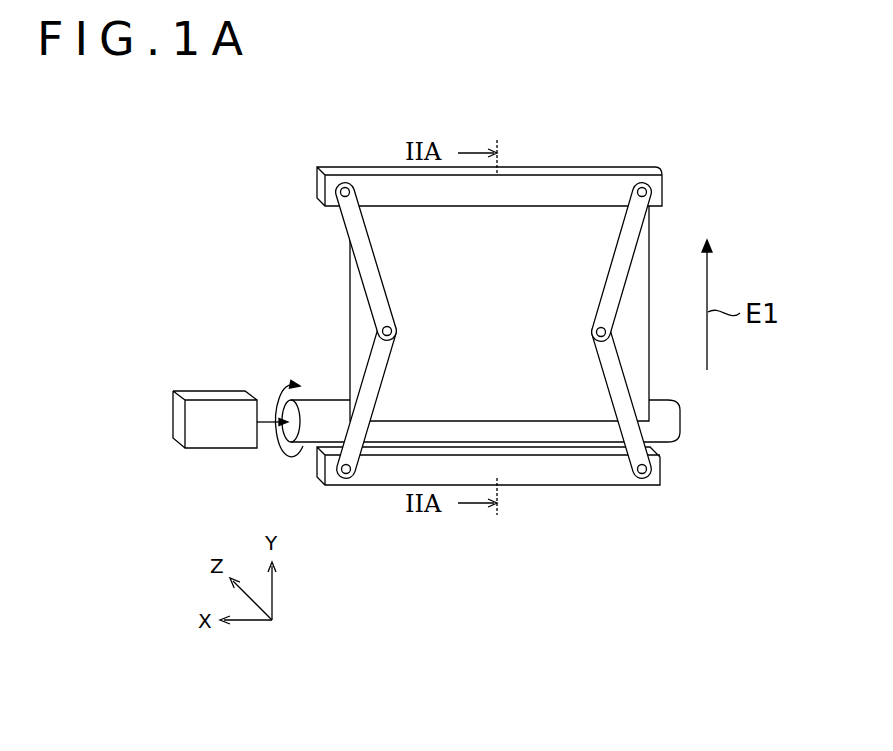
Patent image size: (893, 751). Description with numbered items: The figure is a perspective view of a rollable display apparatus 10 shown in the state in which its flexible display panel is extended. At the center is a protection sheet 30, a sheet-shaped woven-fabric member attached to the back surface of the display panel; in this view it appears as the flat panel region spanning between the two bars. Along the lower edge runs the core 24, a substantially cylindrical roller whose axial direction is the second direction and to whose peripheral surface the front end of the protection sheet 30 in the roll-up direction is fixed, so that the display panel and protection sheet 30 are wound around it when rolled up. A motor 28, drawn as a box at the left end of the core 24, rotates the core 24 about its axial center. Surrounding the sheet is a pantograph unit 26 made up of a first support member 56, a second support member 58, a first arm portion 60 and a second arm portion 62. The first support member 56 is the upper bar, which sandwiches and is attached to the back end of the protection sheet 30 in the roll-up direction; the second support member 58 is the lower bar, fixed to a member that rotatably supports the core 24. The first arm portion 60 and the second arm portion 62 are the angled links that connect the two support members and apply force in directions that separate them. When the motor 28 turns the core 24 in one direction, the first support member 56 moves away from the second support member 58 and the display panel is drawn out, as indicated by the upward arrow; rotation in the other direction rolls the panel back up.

The display apparatus 10 is at (456, 296).
The core 24 is at (668, 421).
The pantograph unit 26 is at (523, 331).
The motor 28 is at (218, 432).
The protection sheet 30 is at (360, 326).
The first support member 56 is at (548, 188).
The second support member 58 is at (548, 470).
The first arm portion 60 is at (638, 232).
The second arm portion 62 is at (352, 232).